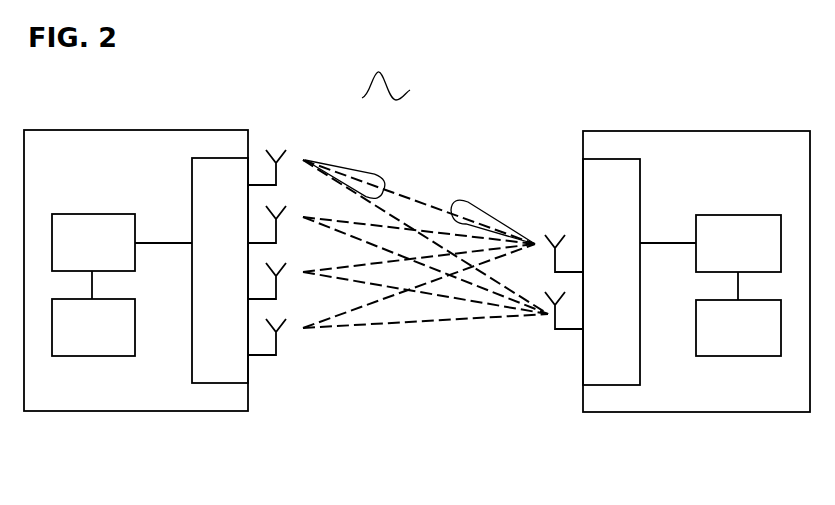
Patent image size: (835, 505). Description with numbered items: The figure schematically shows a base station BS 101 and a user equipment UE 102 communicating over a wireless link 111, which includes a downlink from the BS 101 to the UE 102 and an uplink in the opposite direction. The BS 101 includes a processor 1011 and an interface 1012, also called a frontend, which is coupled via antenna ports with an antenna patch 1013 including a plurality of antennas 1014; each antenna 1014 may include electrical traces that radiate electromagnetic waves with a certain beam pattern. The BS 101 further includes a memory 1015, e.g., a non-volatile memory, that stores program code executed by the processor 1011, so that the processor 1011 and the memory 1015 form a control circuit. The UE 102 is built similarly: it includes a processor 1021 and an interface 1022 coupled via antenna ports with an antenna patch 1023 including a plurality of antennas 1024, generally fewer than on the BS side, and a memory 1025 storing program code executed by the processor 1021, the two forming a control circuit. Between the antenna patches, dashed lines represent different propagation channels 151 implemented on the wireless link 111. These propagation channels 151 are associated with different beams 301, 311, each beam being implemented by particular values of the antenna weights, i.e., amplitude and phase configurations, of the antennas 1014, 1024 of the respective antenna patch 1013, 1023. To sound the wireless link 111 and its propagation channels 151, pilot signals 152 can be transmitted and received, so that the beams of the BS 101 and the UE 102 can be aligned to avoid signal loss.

The BS 101 is at (232, 133).
The processor 1011 is at (66, 214).
The interface 1012 is at (192, 176).
The antenna patch 1013 is at (276, 122).
The antennas 1014 is at (288, 149).
The memory 1015 is at (66, 356).
The UE 102 is at (612, 133).
The processor 1021 is at (773, 222).
The interface 1022 is at (640, 178).
The antenna patch 1023 is at (556, 122).
The antennas 1024 is at (563, 233).
The memory 1025 is at (772, 357).
The propagation channels 151 is at (422, 178).
The pilot signals 152 is at (378, 72).
The beam 301 is at (381, 177).
The beam 311 is at (465, 202).
The wireless link 111 is at (408, 456).